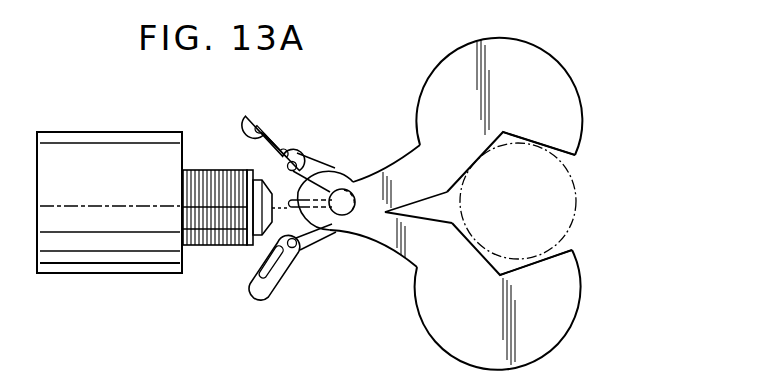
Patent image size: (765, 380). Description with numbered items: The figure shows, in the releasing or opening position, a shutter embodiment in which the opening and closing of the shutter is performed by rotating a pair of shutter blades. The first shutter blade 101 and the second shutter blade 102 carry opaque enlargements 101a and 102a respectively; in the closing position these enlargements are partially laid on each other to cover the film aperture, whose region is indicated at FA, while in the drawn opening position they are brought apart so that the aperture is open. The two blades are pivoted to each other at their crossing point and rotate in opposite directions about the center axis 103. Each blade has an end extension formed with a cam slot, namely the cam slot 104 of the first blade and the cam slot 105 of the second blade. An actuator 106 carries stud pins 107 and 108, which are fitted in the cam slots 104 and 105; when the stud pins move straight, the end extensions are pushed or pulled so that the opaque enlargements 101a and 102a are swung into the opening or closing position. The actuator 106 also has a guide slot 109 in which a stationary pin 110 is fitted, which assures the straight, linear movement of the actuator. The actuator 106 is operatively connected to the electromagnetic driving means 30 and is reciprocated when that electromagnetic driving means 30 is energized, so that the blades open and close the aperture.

The electromagnetic driving means 30 is at (133, 128).
The first shutter blade 101 is at (563, 341).
The opaque enlargement 101a is at (577, 289).
The second shutter blade 102 is at (564, 62).
The opaque enlargement 102a is at (580, 104).
The center axis 103 is at (343, 212).
The cam slot 104 is at (266, 119).
The cam slot 105 is at (281, 283).
The actuator 106 is at (262, 171).
The stud pin 107 is at (293, 151).
The stud pin 108 is at (286, 246).
The guide slot 109 is at (308, 194).
The stationary pin 110 is at (303, 178).
The film axis FA is at (578, 220).